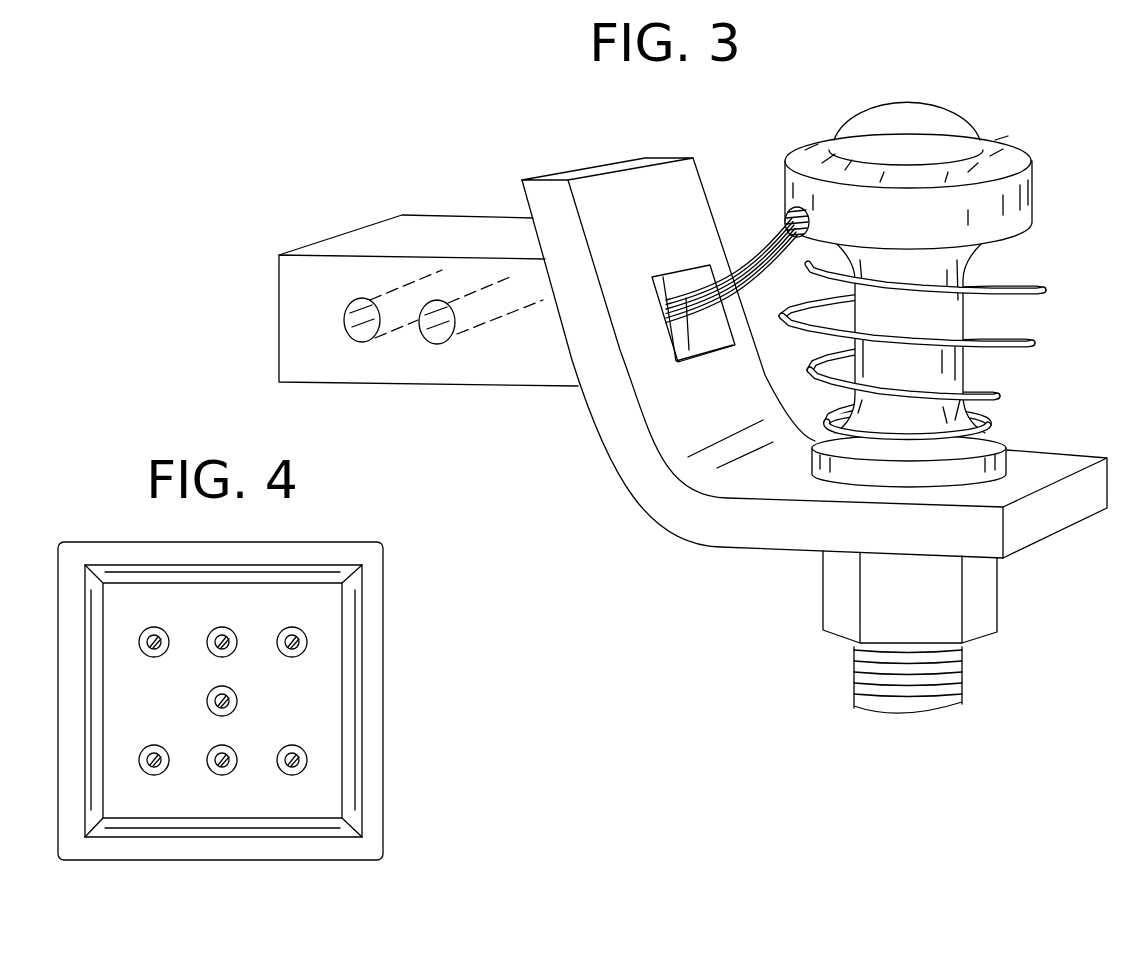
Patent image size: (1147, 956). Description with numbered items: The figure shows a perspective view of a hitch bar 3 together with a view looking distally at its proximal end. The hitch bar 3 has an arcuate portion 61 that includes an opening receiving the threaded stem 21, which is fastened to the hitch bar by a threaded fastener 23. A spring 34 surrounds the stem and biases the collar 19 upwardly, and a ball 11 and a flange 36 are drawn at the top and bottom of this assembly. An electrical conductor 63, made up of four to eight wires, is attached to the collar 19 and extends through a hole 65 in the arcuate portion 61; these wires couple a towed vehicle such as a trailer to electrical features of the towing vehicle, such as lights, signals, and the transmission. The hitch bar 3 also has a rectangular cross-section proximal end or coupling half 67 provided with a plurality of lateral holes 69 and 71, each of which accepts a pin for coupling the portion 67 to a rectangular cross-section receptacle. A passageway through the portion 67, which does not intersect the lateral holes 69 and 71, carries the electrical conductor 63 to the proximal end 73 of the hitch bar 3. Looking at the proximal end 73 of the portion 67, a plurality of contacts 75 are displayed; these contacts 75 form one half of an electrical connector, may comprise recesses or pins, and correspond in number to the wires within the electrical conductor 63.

In FIG. 3, the hitch bar 3 is at (845, 528).
In FIG. 3, the ball 11 is at (950, 127).
In FIG. 3, the collar 19 is at (910, 338).
In FIG. 3, the threaded stem 21 is at (968, 683).
In FIG. 3, the threaded fastener 23 is at (980, 603).
In FIG. 3, the spring 34 is at (912, 357).
In FIG. 3, the flange 36 is at (1013, 445).
In FIG. 3, the arcuate portion 61 is at (641, 520).
In FIG. 3, the electrical conductor 63 is at (745, 252).
In FIG. 3, the hole 65 is at (663, 360).
In FIG. 3, the coupling half 67 is at (388, 233).
In FIG. 3, the lateral hole 69 is at (368, 342).
In FIG. 3, the lateral hole 71 is at (445, 342).
In FIG. 3, the proximal end 73 is at (278, 300).
In FIG. 4, the proximal end 73 is at (437, 826).
In FIG. 4, the contacts 75 is at (235, 777).